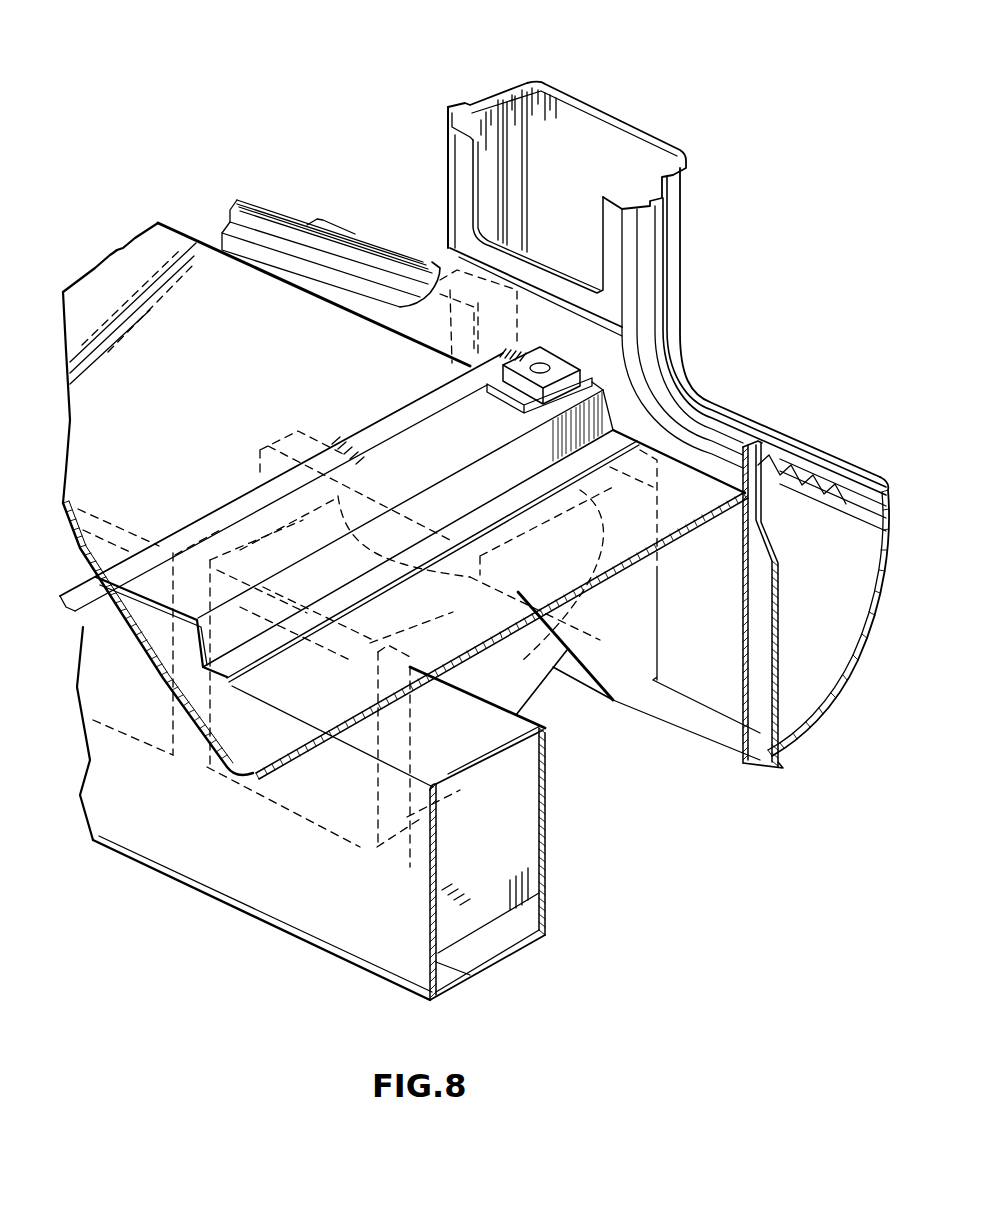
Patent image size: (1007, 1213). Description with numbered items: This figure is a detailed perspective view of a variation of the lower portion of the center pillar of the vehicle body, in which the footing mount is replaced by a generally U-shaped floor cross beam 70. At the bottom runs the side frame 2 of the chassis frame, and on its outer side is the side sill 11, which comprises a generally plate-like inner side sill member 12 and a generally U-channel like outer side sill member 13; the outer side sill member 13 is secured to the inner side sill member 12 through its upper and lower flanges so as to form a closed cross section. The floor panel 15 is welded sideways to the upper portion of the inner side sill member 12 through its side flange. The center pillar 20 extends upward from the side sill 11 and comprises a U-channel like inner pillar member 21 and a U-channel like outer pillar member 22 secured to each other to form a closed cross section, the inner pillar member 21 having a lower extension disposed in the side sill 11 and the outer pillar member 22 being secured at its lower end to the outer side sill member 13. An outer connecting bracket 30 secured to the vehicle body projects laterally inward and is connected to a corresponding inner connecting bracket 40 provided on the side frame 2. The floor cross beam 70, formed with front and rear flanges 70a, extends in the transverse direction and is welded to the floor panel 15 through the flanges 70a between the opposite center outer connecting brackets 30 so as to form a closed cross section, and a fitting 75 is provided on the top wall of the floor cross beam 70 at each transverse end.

The side frame 2 is at (547, 813).
The side sill 11 is at (806, 656).
The inner side sill member 12 is at (723, 690).
The outer side sill member 13 is at (833, 697).
The floor panel 15 is at (145, 277).
The center pillar 20 is at (667, 275).
The inner pillar member 21 is at (627, 217).
The outer pillar member 22 is at (675, 185).
The outer connecting bracket 30 is at (613, 700).
The inner connecting bracket 40 is at (553, 670).
The floor cross beam 70 is at (349, 527).
The front and rear flanges 70a is at (245, 652).
The fitting 75 is at (548, 360).